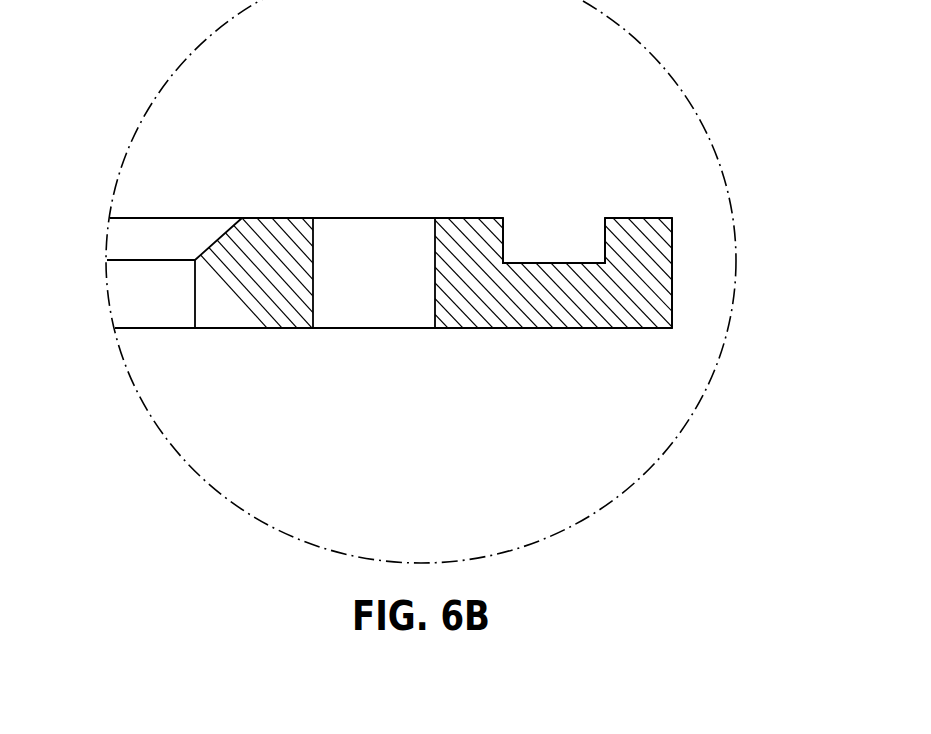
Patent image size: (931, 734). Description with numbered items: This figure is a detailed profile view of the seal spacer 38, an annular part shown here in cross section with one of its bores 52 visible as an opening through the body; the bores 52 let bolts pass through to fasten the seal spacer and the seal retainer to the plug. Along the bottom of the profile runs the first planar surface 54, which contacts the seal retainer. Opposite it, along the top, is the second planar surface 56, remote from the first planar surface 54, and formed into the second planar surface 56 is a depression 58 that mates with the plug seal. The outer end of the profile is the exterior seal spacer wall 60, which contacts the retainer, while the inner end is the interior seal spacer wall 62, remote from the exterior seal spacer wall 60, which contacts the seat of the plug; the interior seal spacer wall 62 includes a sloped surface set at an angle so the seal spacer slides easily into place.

The seal spacer 38 is at (597, 146).
The bore 52 is at (370, 330).
The first planar surface 54 is at (552, 330).
The second planar surface 56 is at (458, 217).
The depression 58 is at (550, 263).
The exterior seal spacer wall 60 is at (672, 270).
The interior seal spacer wall 62 is at (195, 300).